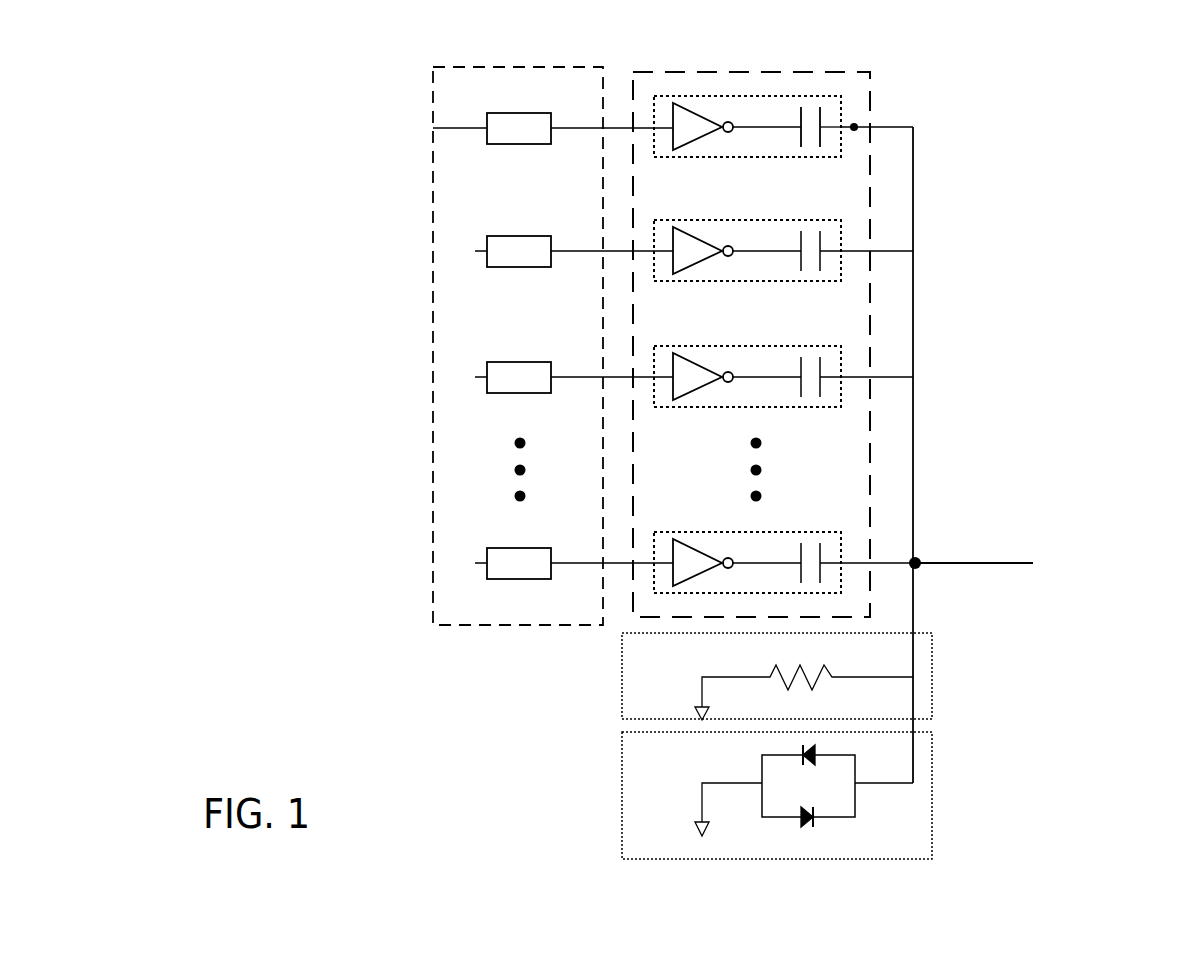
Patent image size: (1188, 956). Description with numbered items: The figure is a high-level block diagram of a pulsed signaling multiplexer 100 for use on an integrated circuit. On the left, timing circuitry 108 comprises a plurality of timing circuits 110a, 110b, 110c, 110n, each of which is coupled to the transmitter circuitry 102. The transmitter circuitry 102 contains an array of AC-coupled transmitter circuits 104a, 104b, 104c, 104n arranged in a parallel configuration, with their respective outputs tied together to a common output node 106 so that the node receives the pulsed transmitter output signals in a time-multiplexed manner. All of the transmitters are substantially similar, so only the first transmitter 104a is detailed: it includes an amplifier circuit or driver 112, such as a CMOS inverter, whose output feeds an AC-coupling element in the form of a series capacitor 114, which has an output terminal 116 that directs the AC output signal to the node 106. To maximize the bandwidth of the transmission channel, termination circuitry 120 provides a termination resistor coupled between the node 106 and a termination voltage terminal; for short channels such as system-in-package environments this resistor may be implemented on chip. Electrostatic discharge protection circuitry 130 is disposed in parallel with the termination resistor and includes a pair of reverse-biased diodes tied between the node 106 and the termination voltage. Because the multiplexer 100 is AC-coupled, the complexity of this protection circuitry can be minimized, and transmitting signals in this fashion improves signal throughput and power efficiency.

The pulsed signaling multiplexer 100 is at (1144, 241).
The transmitter circuitry 102 is at (870, 455).
The AC-coupled transmitter circuit 104a is at (793, 123).
The AC-coupled transmitter circuit 104b is at (841, 219).
The AC-coupled transmitter circuit 104c is at (841, 346).
The AC-coupled transmitter circuit 104n is at (841, 538).
The common output node 106 is at (918, 567).
The timing circuitry 108 is at (456, 625).
The timing circuit 110a is at (433, 128).
The timing circuit 110b is at (475, 251).
The timing circuit 110c is at (475, 377).
The timing circuit 110n is at (475, 563).
The driver 112 is at (700, 113).
The series capacitor 114 is at (800, 143).
The output terminal 116 is at (855, 126).
The termination circuitry 120 is at (622, 679).
The electrostatic discharge protection circuitry 130 is at (932, 790).